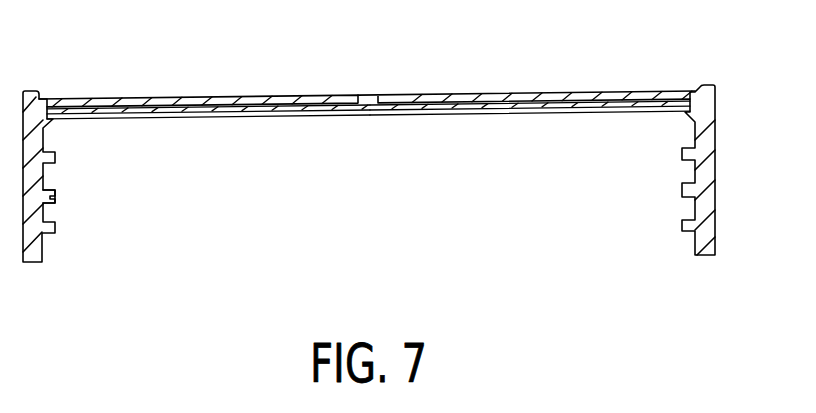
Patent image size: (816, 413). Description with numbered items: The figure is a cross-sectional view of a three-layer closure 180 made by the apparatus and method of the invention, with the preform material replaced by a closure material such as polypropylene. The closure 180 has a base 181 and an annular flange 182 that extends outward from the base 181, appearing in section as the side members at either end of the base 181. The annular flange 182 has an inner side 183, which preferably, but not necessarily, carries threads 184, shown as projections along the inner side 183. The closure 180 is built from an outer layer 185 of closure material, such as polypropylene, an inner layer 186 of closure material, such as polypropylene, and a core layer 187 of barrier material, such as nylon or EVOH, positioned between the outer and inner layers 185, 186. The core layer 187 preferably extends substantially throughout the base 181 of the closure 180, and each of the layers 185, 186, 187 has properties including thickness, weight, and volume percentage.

The closure 180 is at (717, 100).
The base 181 is at (135, 92).
The annular flange 182 is at (708, 236).
The inner side 183 is at (52, 208).
The threads 184 is at (56, 158).
The outer layer 185 is at (418, 92).
The inner layer 186 is at (502, 116).
The core layer 187 is at (248, 118).